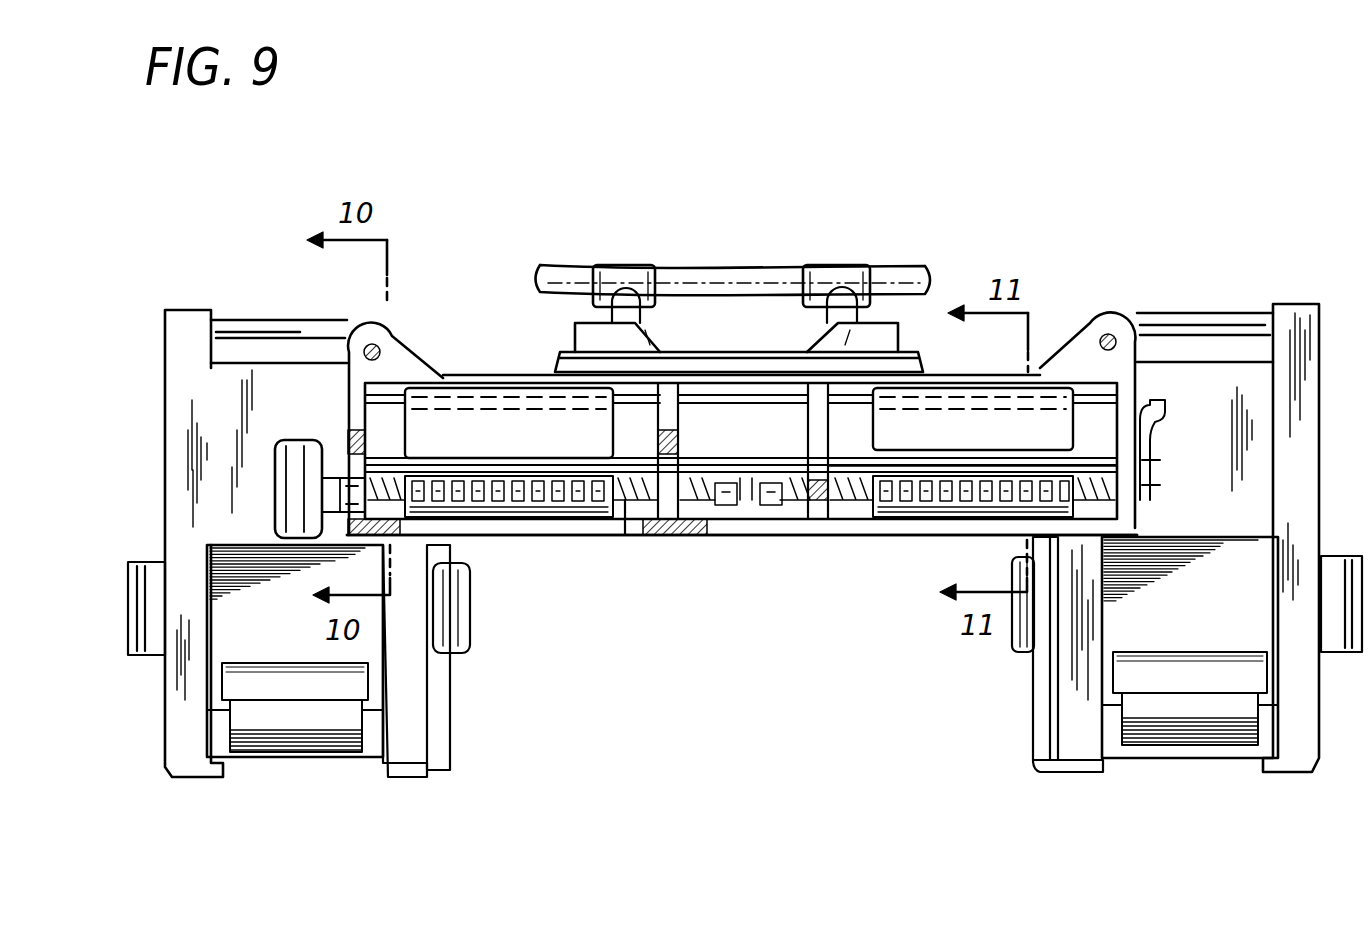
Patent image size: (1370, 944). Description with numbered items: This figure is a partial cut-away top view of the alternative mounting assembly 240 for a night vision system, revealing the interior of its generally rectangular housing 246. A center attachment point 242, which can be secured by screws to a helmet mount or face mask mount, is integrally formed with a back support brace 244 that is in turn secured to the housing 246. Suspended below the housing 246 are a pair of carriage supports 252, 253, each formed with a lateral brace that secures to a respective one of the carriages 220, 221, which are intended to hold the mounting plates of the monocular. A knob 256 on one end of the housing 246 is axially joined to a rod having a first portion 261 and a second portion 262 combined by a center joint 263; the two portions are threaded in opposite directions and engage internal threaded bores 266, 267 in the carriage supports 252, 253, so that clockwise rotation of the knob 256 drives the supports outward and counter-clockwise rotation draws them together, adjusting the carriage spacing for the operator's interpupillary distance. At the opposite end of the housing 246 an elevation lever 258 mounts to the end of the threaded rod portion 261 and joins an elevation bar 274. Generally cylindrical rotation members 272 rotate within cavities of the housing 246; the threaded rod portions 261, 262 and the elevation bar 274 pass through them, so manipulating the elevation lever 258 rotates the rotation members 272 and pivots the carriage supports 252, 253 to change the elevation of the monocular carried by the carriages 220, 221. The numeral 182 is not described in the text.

The rod 182 is at (895, 280).
The carriage 220 is at (188, 737).
The carriage 221 is at (1070, 725).
The mounting assembly 240 is at (685, 537).
The center attachment point 242 is at (778, 350).
The back support brace 244 is at (690, 370).
The housing 246 is at (528, 372).
The carriage support 252 is at (443, 435).
The carriage support 253 is at (1028, 428).
The knob 256 is at (293, 492).
The elevation lever 258 is at (1177, 420).
The first portion of rod 261 is at (853, 498).
The second portion of rod 262 is at (626, 526).
The center joint 263 is at (745, 498).
The internal threaded bore 266 is at (480, 457).
The internal threaded bore 267 is at (990, 505).
The rotation member 272 is at (352, 475).
The elevation bar 274 is at (945, 460).